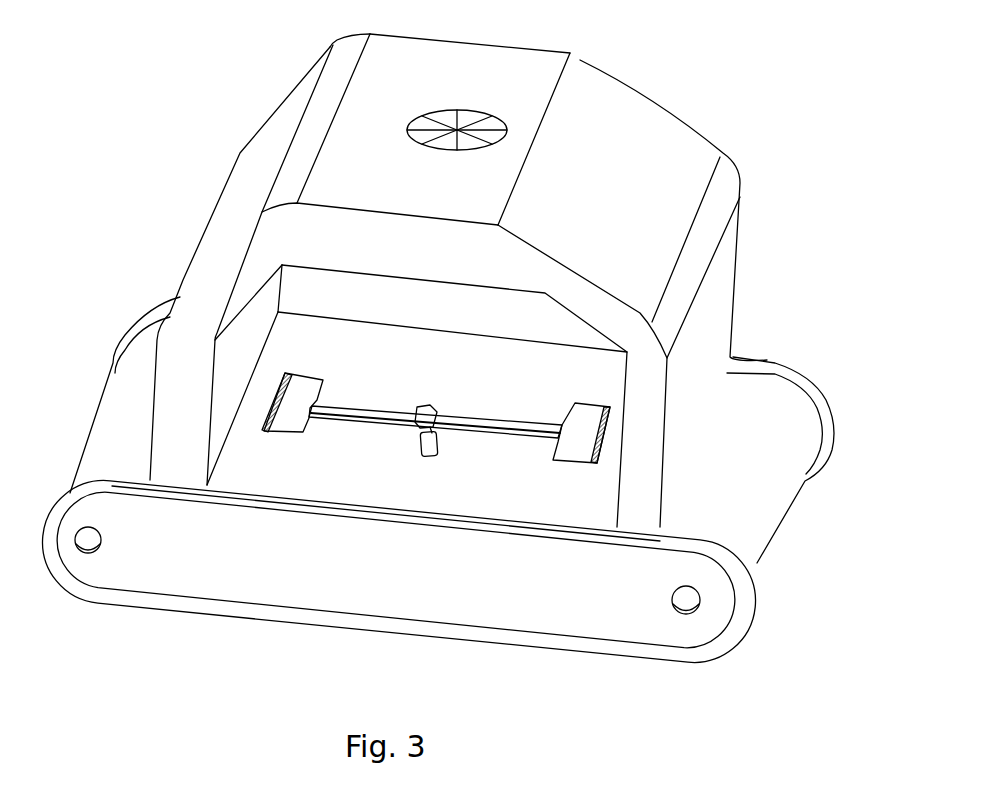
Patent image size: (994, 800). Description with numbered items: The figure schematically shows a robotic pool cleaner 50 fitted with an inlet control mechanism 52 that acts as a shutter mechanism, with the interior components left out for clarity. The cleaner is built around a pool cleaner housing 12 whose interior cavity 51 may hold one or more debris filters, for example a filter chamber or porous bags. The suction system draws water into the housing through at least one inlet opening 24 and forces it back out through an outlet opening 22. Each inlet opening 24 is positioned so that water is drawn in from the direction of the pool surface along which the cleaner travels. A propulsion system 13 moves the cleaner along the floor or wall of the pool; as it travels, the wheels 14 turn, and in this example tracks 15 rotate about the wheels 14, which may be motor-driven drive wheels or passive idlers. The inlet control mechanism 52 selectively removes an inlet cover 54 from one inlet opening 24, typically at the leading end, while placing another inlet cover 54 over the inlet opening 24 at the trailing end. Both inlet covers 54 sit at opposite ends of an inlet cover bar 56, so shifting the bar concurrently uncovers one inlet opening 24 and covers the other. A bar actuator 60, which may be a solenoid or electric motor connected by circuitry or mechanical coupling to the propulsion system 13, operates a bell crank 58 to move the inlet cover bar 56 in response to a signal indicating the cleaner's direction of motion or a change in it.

The robotic pool cleaner 50 is at (147, 127).
The pool cleaner housing 12 is at (725, 163).
The interior cavity 51 is at (293, 300).
The outlet opening 22 is at (490, 120).
The wheels 14 is at (760, 560).
The propulsion system 13 is at (448, 598).
The tracks 15 is at (175, 593).
The inlet control mechanism 52 is at (418, 493).
The inlet cover bar 56 is at (497, 420).
The inlet cover 54 is at (300, 413).
The inlet opening 24 is at (277, 413).
The bell crank 58 is at (428, 407).
The bar actuator 60 is at (433, 447).